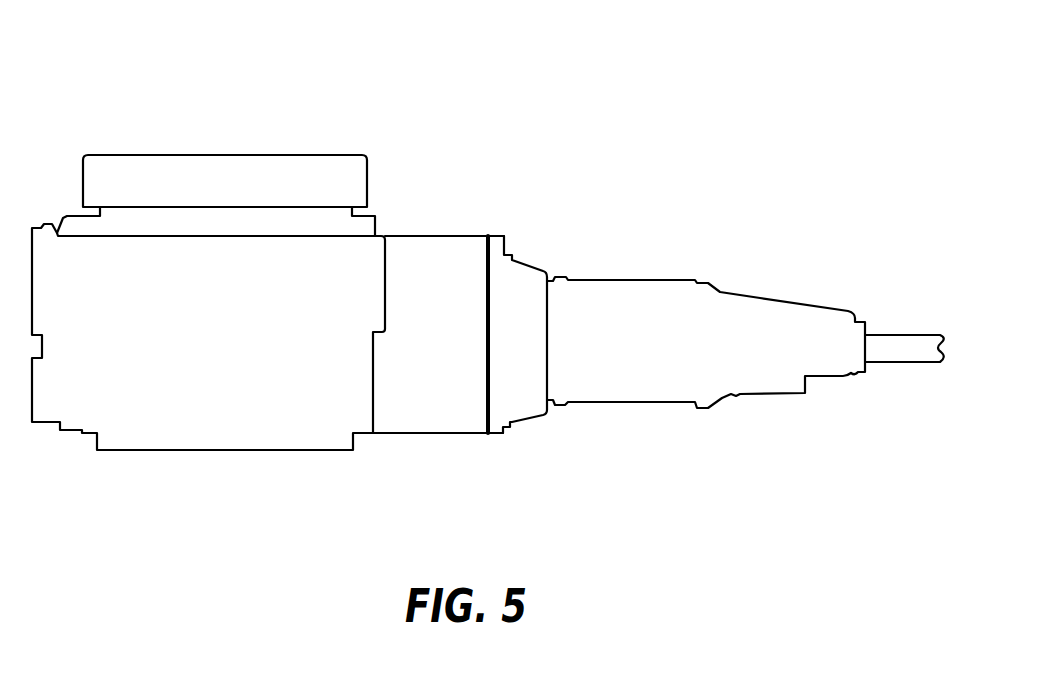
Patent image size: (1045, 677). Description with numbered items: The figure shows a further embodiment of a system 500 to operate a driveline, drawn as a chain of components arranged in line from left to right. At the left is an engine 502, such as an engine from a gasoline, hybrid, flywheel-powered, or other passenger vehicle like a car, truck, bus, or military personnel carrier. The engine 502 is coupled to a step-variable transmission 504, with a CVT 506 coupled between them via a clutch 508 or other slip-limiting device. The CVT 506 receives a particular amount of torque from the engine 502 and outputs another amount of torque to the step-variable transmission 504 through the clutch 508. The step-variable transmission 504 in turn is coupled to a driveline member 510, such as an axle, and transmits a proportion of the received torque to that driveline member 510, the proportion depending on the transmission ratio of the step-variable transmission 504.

The system 500 is at (100, 90).
The engine 502 is at (235, 338).
The step-variable transmission 504 is at (700, 352).
The CVT 506 is at (457, 338).
The clutch 508 is at (529, 250).
The driveline member 510 is at (909, 376).